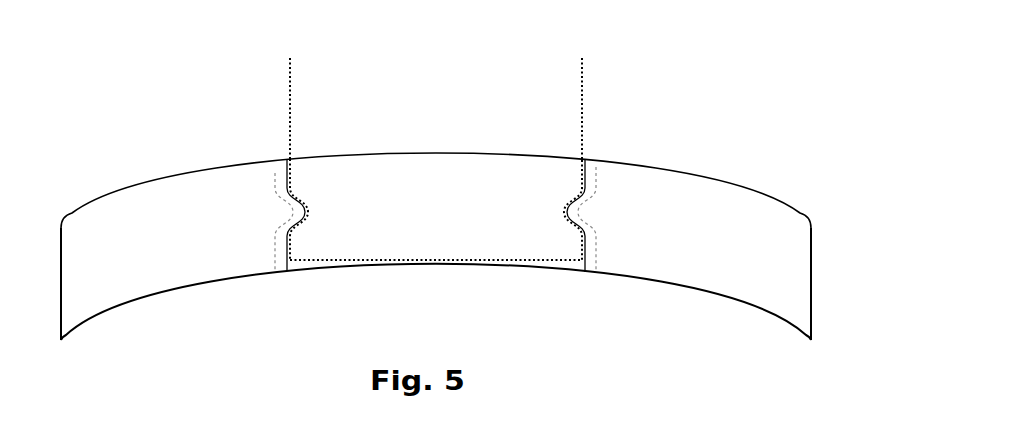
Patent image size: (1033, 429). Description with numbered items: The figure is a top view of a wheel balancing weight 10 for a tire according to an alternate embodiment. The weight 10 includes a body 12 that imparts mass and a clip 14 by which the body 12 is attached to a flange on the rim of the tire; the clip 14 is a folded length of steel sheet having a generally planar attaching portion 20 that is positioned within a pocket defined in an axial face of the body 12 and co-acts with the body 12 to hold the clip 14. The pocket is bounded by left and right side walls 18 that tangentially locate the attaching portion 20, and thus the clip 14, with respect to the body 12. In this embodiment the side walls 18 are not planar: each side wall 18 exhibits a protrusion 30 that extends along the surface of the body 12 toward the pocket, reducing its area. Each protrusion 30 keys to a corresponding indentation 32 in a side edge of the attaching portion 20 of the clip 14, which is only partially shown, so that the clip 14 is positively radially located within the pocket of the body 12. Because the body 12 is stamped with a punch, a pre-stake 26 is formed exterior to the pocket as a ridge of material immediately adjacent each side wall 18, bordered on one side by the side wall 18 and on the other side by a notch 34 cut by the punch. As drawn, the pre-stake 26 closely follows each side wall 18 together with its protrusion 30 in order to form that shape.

The wheel balancing weight 10 is at (153, 88).
The body 12 is at (112, 278).
The clip 14 is at (598, 111).
The side walls 18 is at (290, 160).
The attaching portion 20 is at (453, 138).
The pre-stake 26 is at (287, 160).
The protrusion 30 is at (286, 218).
The indentation 32 is at (307, 208).
The notch 34 is at (277, 175).